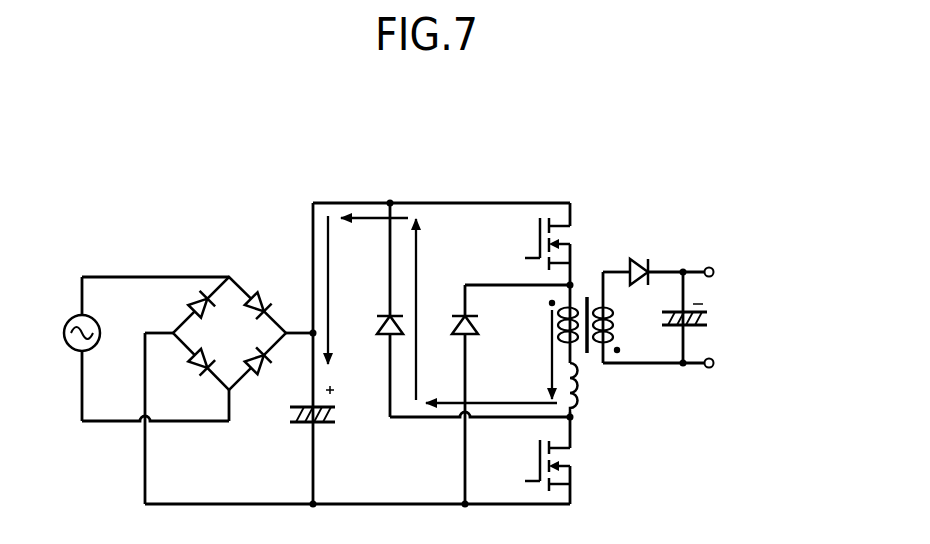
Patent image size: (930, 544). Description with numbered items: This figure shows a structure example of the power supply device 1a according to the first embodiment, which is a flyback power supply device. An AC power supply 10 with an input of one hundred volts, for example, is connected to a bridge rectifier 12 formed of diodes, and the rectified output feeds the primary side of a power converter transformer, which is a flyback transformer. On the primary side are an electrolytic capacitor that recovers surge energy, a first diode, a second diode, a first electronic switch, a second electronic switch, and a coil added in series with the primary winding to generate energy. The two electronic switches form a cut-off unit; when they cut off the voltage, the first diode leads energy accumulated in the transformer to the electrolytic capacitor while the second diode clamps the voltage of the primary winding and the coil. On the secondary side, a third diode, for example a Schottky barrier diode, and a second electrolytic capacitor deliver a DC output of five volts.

The AC power supply 10 is at (68, 350).
The bridge rectifier 12 is at (250, 258).
The power supply device 1a is at (624, 165).